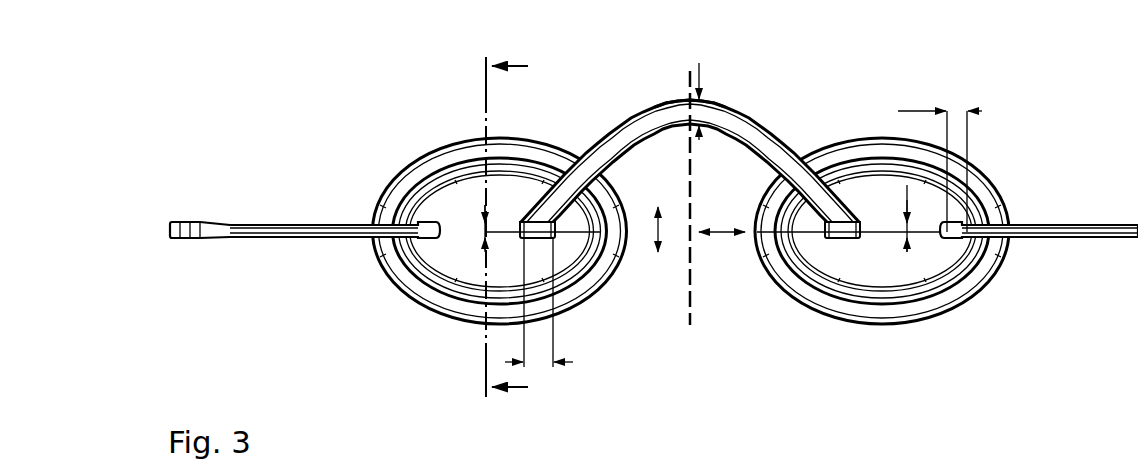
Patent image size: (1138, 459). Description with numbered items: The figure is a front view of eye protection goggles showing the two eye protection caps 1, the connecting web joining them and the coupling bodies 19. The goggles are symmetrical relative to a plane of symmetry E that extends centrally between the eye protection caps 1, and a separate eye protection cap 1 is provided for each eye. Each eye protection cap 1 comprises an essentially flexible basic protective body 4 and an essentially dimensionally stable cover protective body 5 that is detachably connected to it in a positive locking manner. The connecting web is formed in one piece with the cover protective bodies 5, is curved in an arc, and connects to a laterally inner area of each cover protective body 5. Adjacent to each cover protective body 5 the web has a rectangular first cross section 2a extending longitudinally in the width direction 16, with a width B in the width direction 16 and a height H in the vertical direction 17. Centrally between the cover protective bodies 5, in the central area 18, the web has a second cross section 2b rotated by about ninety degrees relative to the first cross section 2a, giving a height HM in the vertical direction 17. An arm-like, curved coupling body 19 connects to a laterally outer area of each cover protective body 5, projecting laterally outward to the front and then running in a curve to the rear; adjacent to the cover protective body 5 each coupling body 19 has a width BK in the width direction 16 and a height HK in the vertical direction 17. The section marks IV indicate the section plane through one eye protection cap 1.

The eye protection cap 1 is at (691, 228).
The first cross section 2a is at (541, 233).
The second cross section 2b is at (680, 111).
The basic protective body 4 is at (441, 314).
The cover protective body 5 is at (429, 264).
The width direction 16 is at (721, 235).
The vertical direction 17 is at (655, 233).
The central area 18 is at (739, 123).
The coupling body 19 is at (267, 242).
The plane of symmetry E is at (689, 99).
The height H is at (532, 224).
The height HK is at (848, 218).
The width BK is at (939, 159).
The width B is at (539, 302).
The height HM is at (720, 101).
The section line IV- IV is at (498, 56).